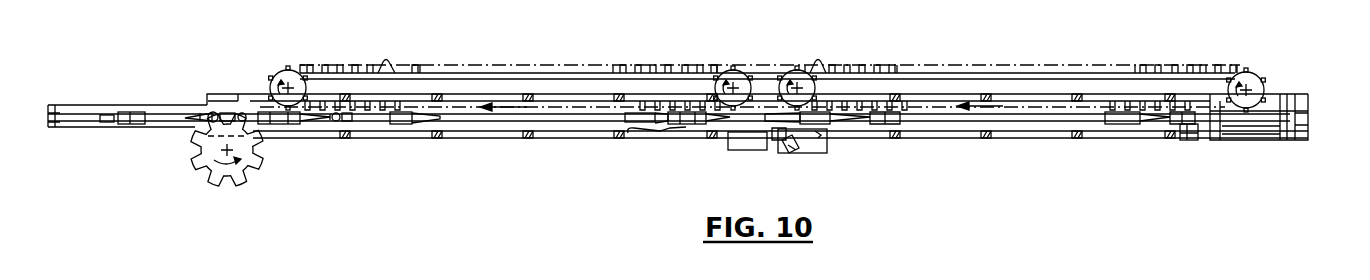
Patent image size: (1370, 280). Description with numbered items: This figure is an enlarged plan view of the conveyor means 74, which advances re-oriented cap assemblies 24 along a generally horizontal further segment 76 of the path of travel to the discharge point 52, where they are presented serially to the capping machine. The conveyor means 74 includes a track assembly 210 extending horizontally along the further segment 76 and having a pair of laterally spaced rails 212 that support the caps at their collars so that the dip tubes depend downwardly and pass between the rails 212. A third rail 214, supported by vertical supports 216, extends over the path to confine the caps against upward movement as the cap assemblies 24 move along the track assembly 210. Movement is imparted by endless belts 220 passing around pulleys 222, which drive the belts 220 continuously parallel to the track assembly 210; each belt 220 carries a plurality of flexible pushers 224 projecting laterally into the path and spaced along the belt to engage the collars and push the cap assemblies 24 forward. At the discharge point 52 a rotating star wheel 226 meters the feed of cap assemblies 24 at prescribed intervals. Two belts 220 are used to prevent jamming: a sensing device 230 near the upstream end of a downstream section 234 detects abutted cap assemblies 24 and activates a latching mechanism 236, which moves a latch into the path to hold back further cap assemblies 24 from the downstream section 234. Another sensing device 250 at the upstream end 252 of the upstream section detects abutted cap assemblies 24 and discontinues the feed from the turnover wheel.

The cap assembly 24 is at (85, 106).
The discharge point 52 is at (236, 100).
The conveyor means 74 is at (567, 142).
The further segment 76 is at (576, 116).
The track assembly 210 is at (1044, 136).
The rails 212 is at (1270, 100).
The third rail 214 is at (1248, 118).
The vertical supports 216 is at (435, 139).
The endless belt 220 is at (313, 66).
The pulley 222 is at (285, 58).
The pusher 224 is at (383, 66).
The star wheel 226 is at (255, 170).
The sensing device 230 is at (748, 140).
The downstream section 234 is at (508, 130).
The latching mechanism 236 is at (826, 145).
The sensing device 250 is at (1190, 141).
The upstream end 252 is at (1275, 118).